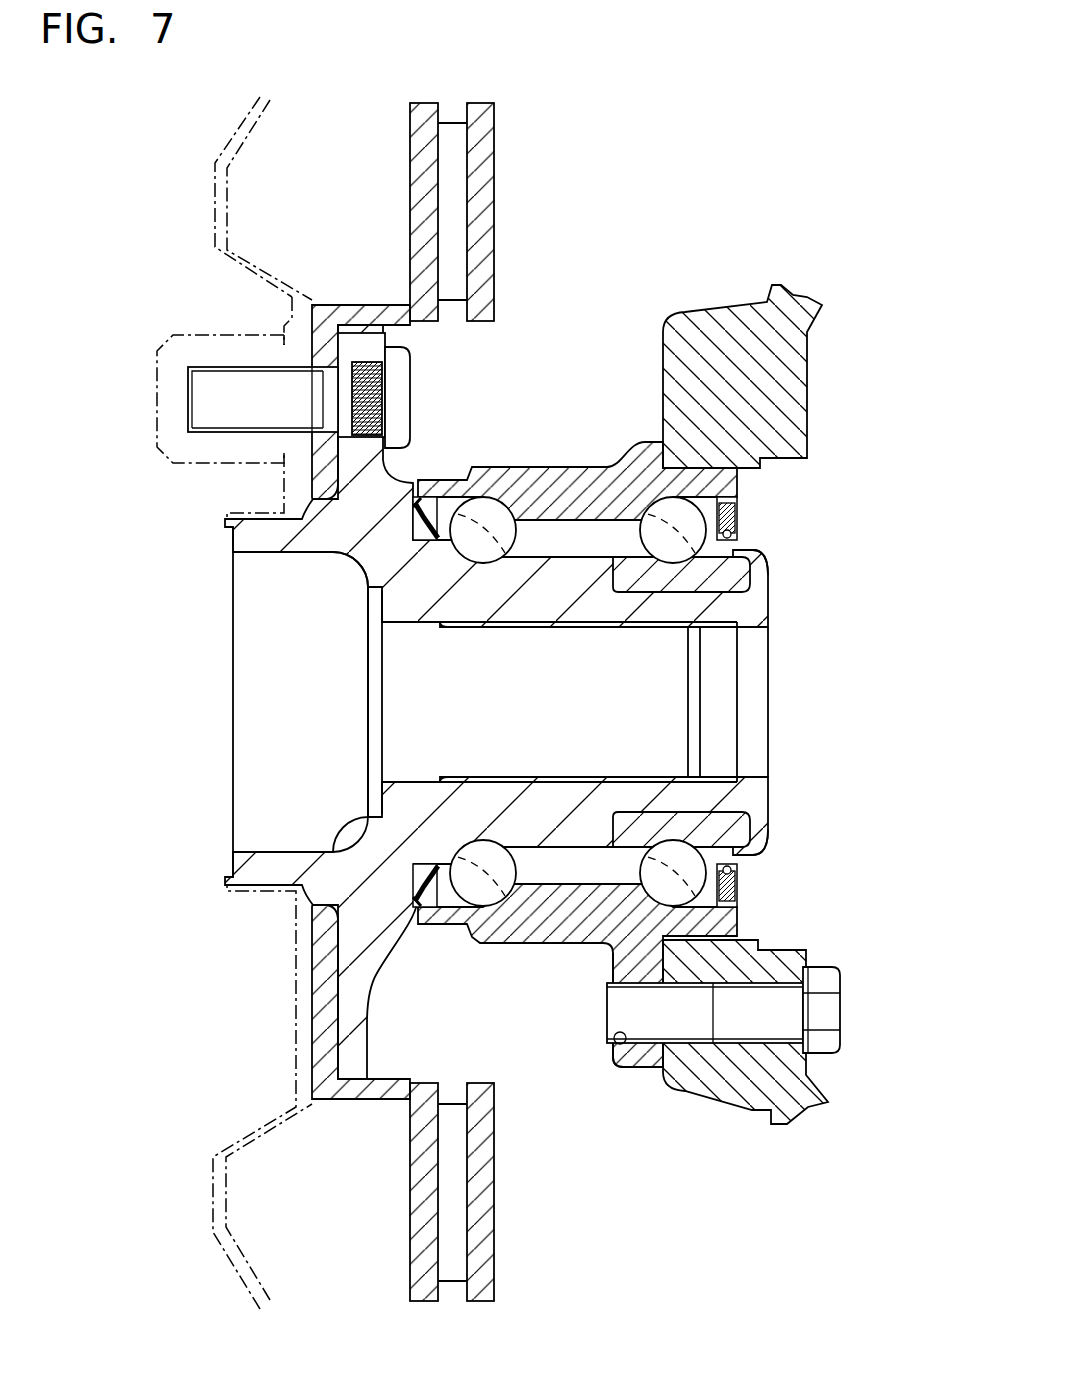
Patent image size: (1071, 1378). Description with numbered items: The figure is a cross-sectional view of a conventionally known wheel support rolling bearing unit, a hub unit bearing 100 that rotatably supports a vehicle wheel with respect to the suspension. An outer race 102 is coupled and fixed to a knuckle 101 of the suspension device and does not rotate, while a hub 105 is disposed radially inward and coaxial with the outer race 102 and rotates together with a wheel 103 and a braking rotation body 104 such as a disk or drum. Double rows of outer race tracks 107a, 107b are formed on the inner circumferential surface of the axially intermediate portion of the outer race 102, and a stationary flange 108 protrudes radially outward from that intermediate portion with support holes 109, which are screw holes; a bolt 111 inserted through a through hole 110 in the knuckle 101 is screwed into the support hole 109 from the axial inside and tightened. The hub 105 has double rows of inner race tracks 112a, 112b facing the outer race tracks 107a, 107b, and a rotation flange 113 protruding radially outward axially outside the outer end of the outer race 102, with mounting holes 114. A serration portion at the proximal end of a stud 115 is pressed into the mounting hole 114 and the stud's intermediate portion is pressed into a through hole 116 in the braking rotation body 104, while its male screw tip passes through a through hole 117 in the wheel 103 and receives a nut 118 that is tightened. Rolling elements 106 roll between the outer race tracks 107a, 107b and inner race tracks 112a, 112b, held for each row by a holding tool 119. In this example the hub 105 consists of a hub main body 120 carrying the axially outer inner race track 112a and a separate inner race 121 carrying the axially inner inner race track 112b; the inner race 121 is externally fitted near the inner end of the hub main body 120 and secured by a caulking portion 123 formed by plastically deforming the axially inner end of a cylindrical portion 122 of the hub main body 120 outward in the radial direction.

The hub unit bearing 100 is at (193, 690).
The knuckle 101 is at (783, 386).
The outer race 102 is at (577, 482).
The wheel 103 is at (230, 158).
The braking rotation body 104 is at (480, 132).
The hub 105 is at (205, 784).
The rolling elements 106 is at (673, 565).
The outer race track 107a is at (462, 905).
The outer race track 107b is at (712, 902).
The stationary flange 108 is at (634, 1068).
The support hole 109 is at (609, 1043).
The through hole 110 is at (752, 1030).
The bolt 111 is at (787, 1015).
The inner race track 112a is at (452, 862).
The inner race track 112b is at (745, 838).
The rotation flange 113 is at (367, 340).
The mounting hole 114 is at (372, 378).
The stud 115 is at (241, 385).
The through hole 116 is at (340, 418).
The through hole 117 is at (293, 417).
The nut 118 is at (165, 403).
The holding tool 119 is at (640, 810).
The hub main body 120 is at (255, 612).
The inner race 121 is at (753, 552).
The cylindrical portion 122 is at (695, 632).
The caulking portion 123 is at (760, 808).